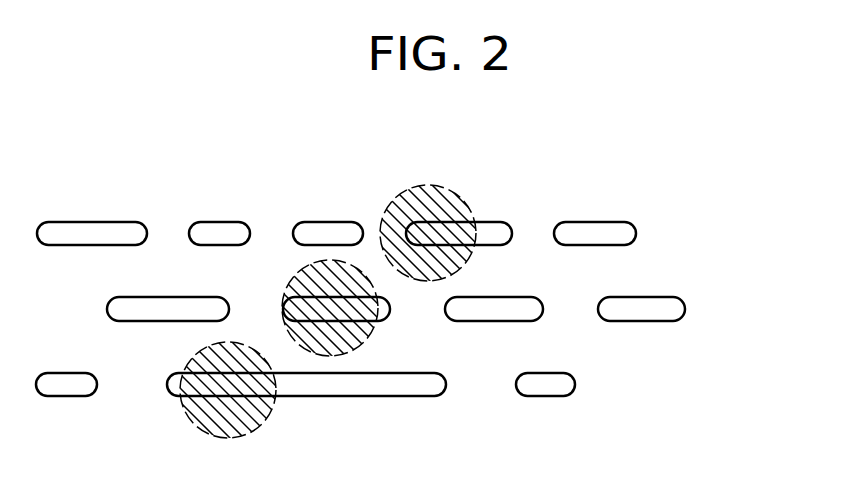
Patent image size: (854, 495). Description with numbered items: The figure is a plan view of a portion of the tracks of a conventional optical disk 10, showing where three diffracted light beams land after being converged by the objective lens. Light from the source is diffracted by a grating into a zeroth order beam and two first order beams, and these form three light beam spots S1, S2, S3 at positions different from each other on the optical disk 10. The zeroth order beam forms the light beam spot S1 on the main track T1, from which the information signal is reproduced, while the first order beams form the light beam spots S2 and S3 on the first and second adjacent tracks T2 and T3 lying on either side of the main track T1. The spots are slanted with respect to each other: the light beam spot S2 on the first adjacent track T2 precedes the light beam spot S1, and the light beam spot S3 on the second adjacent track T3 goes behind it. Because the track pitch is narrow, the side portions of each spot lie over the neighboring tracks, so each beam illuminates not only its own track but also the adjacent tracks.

The optical disk 10 is at (569, 204).
The main track T1 is at (697, 310).
The first adjacent track T2 is at (680, 236).
The second adjacent track T3 is at (680, 386).
The light beam spot S1 is at (298, 271).
The light beam spot S2 is at (432, 185).
The light beam spot S3 is at (272, 412).